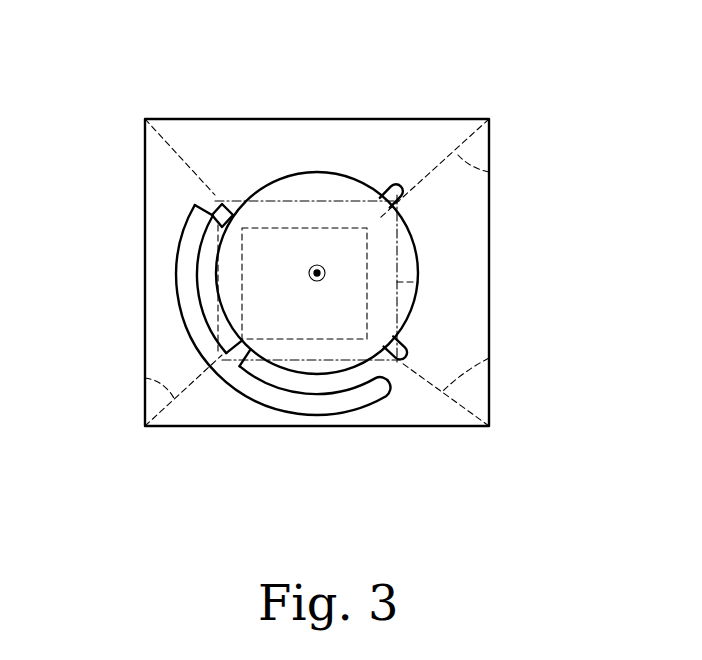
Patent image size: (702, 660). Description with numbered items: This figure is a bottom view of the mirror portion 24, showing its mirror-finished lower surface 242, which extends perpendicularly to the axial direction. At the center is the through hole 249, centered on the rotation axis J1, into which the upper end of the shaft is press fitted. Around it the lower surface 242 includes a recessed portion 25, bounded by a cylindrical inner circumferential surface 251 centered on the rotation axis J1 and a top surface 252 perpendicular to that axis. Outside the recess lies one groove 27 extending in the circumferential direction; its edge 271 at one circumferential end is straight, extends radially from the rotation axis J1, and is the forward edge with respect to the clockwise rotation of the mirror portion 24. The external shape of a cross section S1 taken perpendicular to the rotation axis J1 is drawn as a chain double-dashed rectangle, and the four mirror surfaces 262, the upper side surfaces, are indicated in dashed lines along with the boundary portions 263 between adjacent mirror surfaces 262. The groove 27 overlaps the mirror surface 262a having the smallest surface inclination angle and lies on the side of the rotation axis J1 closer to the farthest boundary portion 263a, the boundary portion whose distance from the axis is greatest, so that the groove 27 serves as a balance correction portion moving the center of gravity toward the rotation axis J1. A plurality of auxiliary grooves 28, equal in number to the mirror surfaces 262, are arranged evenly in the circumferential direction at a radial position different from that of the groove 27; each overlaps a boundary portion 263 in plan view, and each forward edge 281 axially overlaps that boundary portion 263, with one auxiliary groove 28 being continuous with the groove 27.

The mirror portion 24 is at (192, 85).
The recessed portion 25 is at (378, 287).
The through hole 249 is at (317, 262).
The groove 27 is at (187, 277).
The edge 271 is at (209, 200).
The lower surface 242 is at (382, 155).
The auxiliary groove 28 is at (220, 203).
The edge 281 is at (227, 203).
The inner circumferential surface 251 is at (226, 295).
The top surface 252 is at (298, 322).
The mirror surface 262 is at (166, 352).
The mirror surface 262a is at (320, 408).
The boundary portion 263 is at (489, 172).
The farthest boundary portion 263a is at (145, 378).
The cross section S1 is at (418, 283).
The rotation axis J1 is at (312, 270).